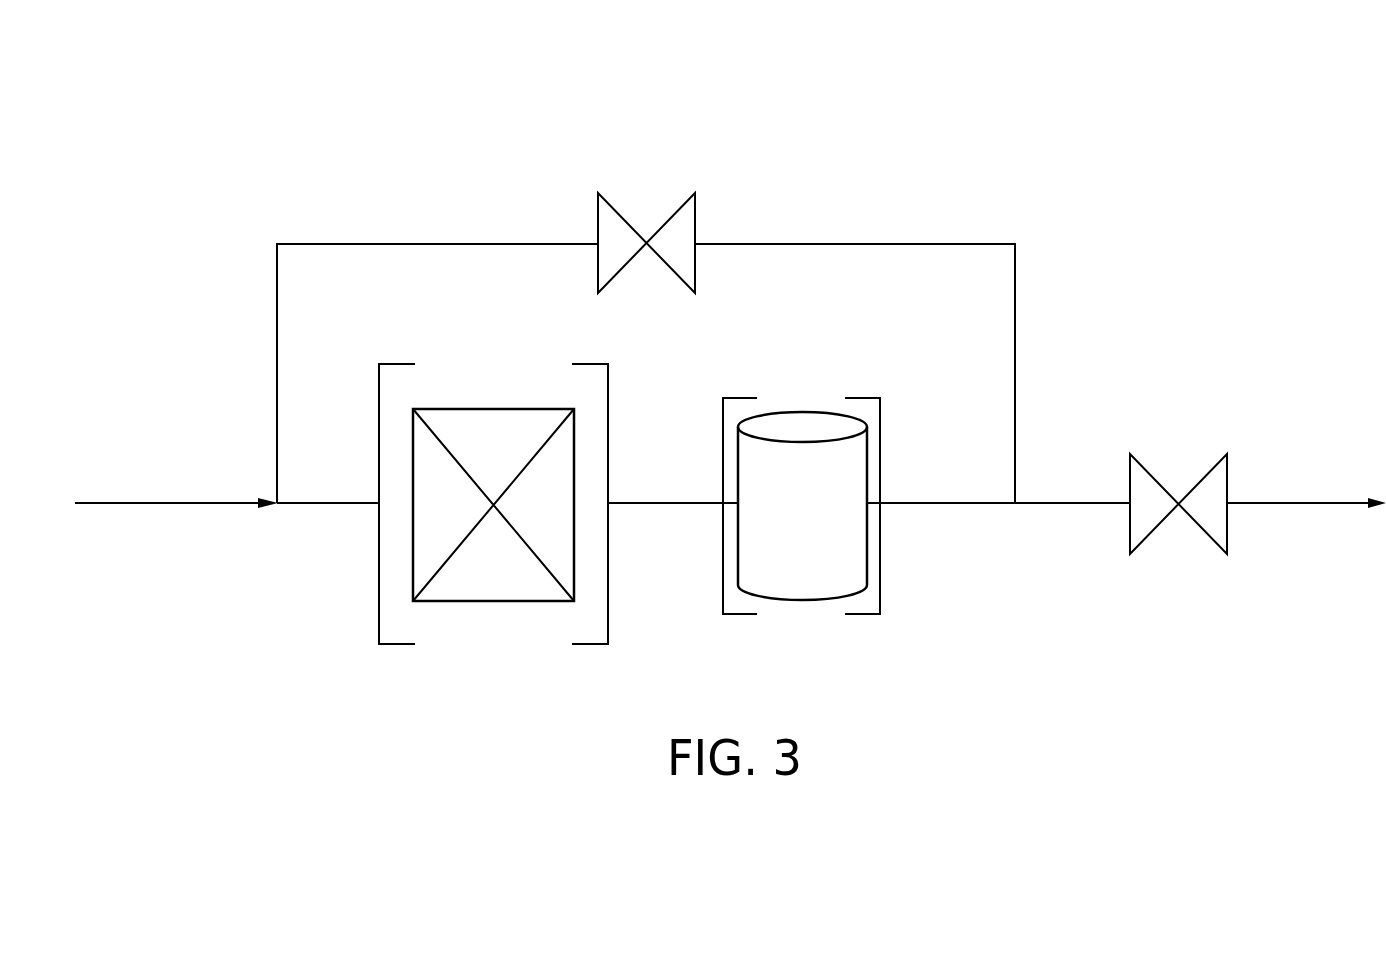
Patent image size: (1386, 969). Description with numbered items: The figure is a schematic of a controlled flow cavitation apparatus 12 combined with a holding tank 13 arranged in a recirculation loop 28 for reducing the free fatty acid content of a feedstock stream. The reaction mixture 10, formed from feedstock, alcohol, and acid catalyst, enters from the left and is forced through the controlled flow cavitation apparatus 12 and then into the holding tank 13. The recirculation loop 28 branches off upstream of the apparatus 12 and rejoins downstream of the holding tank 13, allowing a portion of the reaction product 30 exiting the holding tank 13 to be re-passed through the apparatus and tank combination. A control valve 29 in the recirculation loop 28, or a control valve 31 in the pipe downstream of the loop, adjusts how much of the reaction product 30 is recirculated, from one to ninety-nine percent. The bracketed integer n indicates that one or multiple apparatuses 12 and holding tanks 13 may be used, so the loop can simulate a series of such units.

The reaction mixture 10 is at (160, 503).
The controlled flow cavitation apparatus 12 is at (497, 409).
The holding tank 13 is at (795, 420).
The recirculation loop 28 is at (852, 244).
The control valve 29 is at (672, 214).
The reaction product 30 is at (1349, 503).
The control valve 31 is at (1208, 472).